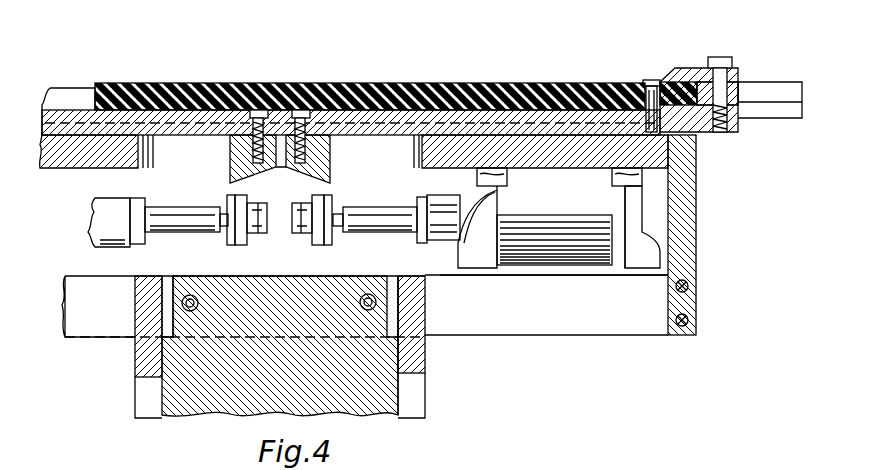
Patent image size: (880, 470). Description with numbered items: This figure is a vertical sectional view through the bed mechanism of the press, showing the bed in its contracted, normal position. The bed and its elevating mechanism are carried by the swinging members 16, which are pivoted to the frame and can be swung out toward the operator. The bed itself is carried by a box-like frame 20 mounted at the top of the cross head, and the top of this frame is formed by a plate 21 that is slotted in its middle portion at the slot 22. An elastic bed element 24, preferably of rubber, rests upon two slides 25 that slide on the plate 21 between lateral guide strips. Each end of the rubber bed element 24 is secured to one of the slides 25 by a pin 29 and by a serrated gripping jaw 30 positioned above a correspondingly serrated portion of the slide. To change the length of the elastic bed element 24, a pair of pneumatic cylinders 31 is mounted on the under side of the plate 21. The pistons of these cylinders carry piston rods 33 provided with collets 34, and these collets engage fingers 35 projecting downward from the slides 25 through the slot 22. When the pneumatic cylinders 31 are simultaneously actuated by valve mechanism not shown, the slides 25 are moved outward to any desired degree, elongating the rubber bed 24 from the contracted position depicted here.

The swinging member 16 is at (136, 360).
The box-like frame 20 is at (572, 320).
The plate 21 is at (74, 168).
The slot 22 is at (166, 168).
The elastic bed element 24 is at (204, 84).
The slide 25 is at (72, 118).
The pin 29 is at (652, 80).
The serrated gripping jaw 30 is at (683, 72).
The pneumatic cylinder 31 is at (556, 262).
The piston rod 33 is at (180, 230).
The collet 34 is at (229, 242).
The finger 35 is at (231, 181).